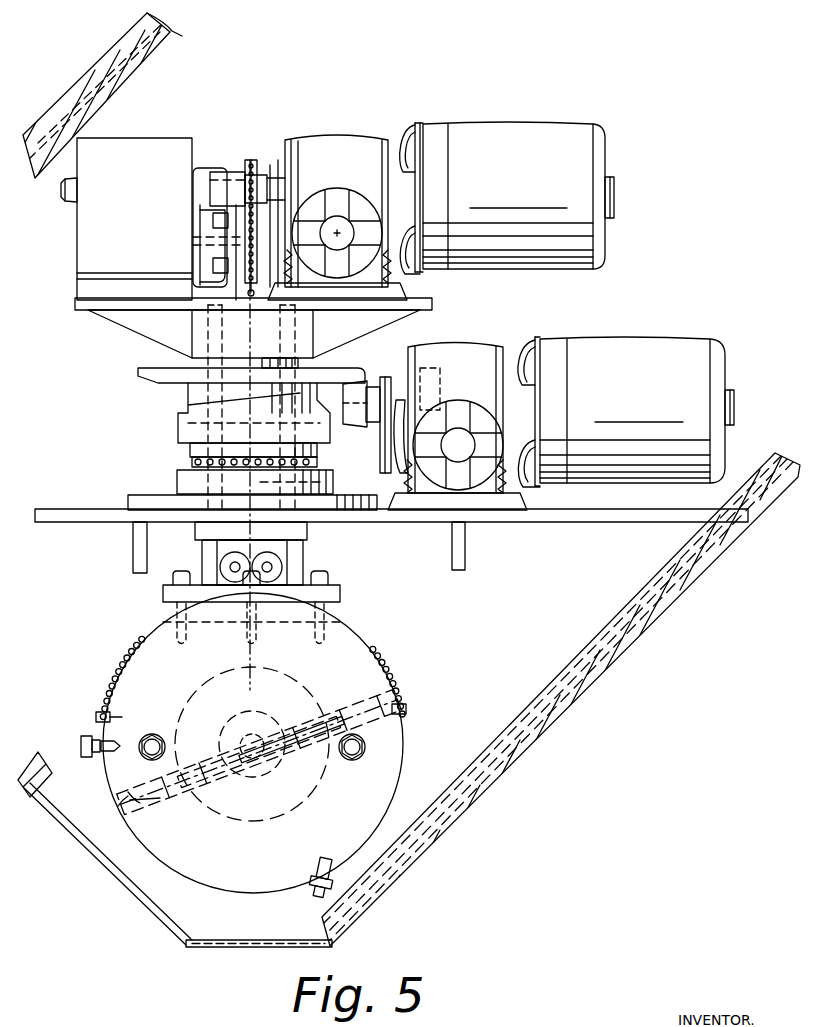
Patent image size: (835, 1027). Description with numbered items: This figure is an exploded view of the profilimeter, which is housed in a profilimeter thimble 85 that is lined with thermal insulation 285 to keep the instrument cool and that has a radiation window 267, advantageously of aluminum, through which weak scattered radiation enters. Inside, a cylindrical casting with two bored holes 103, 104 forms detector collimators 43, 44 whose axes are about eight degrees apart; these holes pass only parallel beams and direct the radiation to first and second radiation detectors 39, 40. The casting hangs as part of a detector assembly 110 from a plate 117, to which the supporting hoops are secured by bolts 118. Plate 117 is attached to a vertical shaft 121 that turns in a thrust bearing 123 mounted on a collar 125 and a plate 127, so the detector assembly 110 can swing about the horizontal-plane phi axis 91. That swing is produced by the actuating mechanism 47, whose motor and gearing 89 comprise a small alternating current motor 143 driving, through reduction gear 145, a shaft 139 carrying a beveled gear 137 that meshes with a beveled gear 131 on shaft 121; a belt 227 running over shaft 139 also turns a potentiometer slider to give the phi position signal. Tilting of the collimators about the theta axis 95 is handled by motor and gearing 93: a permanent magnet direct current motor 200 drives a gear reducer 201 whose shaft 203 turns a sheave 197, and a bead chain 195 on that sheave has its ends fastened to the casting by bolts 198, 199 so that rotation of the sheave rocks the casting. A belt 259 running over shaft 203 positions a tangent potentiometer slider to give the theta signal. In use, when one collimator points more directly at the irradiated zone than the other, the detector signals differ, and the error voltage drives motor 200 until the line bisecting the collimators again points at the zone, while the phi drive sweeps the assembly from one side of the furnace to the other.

The profilimeter thimble 85 is at (102, 53).
The motor and gearing 93 is at (337, 199).
The motor 200 is at (490, 125).
The gear reducer 201 is at (347, 126).
The belt 259 is at (287, 237).
The sheave 197 is at (250, 162).
The shaft 203 is at (275, 185).
The bead chain 195 is at (255, 227).
The beveled gear 131 is at (152, 370).
The axis 91 is at (190, 403).
The belt 227 is at (399, 397).
The shaft 139 is at (380, 378).
The beveled gear 137 is at (352, 427).
The reduction gear 145 is at (433, 344).
The motor 143 is at (605, 344).
The motor and gearing 89 is at (531, 409).
The thrust bearing 123 is at (194, 461).
The collar 125 is at (177, 477).
The vertical shaft 121 is at (333, 478).
The plate 127 is at (97, 492).
The actuating mechanism 47 is at (528, 532).
The bolts 118 is at (321, 572).
The plate 117 is at (342, 592).
The detector assembly 110 is at (271, 746).
The radiation detector 39 is at (350, 705).
The radiation detector 40 is at (324, 743).
The collimator 44 is at (157, 800).
The axis 95 is at (262, 760).
The bolt 199 is at (406, 710).
The bolt 198 is at (96, 717).
The collimator 43 is at (127, 753).
The hole 103 is at (106, 770).
The thermal insulation 285 is at (47, 792).
The hole 104 is at (120, 804).
The radiation window 267 is at (149, 906).